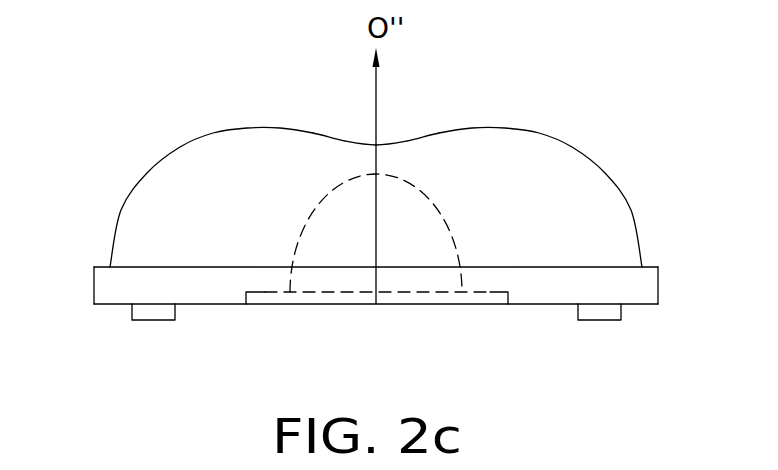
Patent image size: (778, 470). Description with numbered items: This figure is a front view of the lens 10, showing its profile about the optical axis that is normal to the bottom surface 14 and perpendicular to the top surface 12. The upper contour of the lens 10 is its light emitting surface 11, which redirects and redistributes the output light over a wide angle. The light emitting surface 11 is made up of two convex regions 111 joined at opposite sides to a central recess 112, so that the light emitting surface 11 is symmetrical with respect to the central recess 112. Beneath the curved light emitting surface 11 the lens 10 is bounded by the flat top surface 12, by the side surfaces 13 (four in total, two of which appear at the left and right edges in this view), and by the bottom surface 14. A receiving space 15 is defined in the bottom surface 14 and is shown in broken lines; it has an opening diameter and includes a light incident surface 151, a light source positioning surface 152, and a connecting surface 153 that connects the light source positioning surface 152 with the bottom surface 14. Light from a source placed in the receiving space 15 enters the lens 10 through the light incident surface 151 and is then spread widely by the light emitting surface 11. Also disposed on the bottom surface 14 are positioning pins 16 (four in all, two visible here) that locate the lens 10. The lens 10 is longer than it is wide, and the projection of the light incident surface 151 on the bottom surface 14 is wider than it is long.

The lens 10 is at (341, 92).
The light emitting surface 11 is at (600, 190).
The convex regions 111 is at (563, 144).
The central recess 112 is at (404, 142).
The top surface 12 is at (647, 265).
The side surfaces 13 is at (658, 284).
The bottom surface 14 is at (647, 307).
The receiving space 15 is at (490, 297).
The light incident surface 151 is at (318, 207).
The light source positioning surface 152 is at (265, 292).
The connecting surface 153 is at (245, 298).
The positioning pins 16 is at (605, 310).